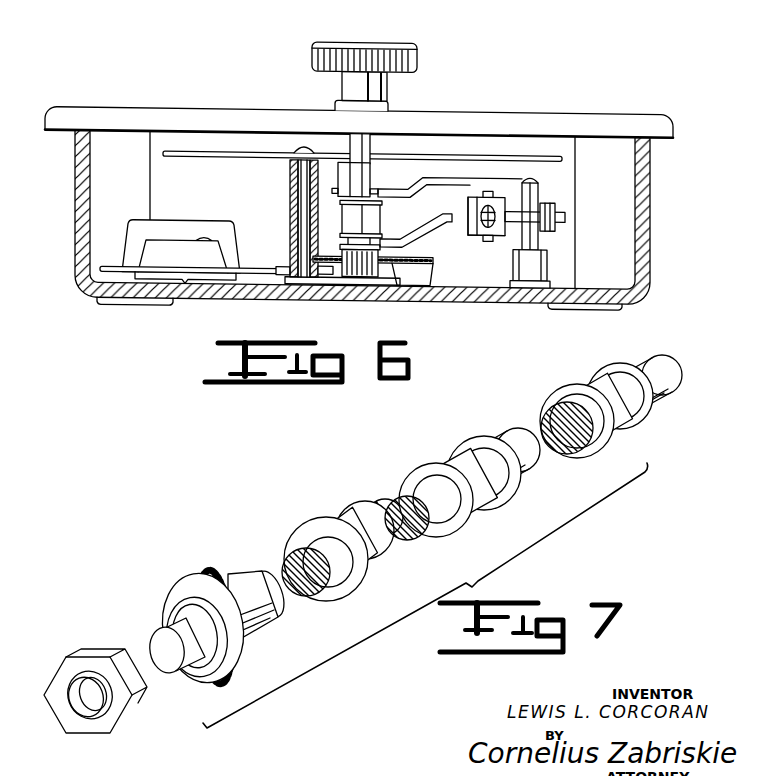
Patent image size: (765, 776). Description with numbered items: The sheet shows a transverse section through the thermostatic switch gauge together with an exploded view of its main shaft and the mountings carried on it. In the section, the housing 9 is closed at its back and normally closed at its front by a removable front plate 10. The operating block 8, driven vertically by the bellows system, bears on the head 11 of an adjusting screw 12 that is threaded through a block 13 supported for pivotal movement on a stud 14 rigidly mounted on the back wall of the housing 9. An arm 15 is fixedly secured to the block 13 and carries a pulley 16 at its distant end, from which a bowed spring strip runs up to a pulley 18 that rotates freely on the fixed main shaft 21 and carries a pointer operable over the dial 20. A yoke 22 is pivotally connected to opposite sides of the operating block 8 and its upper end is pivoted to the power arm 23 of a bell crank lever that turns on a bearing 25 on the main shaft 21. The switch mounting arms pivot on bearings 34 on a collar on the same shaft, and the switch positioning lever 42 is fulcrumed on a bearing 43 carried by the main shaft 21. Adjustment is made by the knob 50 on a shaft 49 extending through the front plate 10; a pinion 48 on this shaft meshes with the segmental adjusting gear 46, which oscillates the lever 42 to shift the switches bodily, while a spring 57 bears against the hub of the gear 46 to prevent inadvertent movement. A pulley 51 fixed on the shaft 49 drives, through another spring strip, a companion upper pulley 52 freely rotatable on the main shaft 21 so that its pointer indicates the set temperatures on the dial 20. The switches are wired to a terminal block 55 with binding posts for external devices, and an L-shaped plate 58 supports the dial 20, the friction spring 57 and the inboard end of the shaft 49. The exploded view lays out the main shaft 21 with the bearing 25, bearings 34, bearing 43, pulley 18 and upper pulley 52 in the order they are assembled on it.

In FIG. 6, the operating block 8 is at (470, 232).
In FIG. 6, the housing 9 is at (652, 278).
In FIG. 6, the front plate 10 is at (50, 108).
In FIG. 6, the head 11 is at (467, 197).
In FIG. 6, the adjusting screw 12 is at (566, 222).
In FIG. 6, the block 13 is at (538, 196).
In FIG. 6, the stud 14 is at (547, 278).
In FIG. 6, the arm 15 is at (470, 195).
In FIG. 6, the pulley 16 is at (378, 176).
In FIG. 7, the pulley 18 is at (588, 385).
In FIG. 6, the dial 20 is at (177, 150).
In FIG. 7, the main shaft 21 is at (434, 556).
In FIG. 6, the yoke 22 is at (500, 180).
In FIG. 6, the power arm 23 is at (452, 228).
In FIG. 7, the bearing 25 is at (365, 497).
In FIG. 7, the bearings 34 is at (181, 592).
In FIG. 6, the switch positioning lever 42 is at (337, 248).
In FIG. 7, the bearing 43 is at (235, 537).
In FIG. 6, the segmental adjusting gear 46 is at (432, 263).
In FIG. 6, the pinion 48 is at (363, 272).
In FIG. 6, the shaft 49 is at (356, 148).
In FIG. 6, the adjusting knob 50 is at (380, 42).
In FIG. 6, the pulley 51 is at (383, 230).
In FIG. 7, the upper pulley 52 is at (450, 428).
In FIG. 6, the terminal block 55 is at (191, 251).
In FIG. 6, the spring 57 is at (285, 274).
In FIG. 6, the L-shaped plate 58 is at (287, 160).